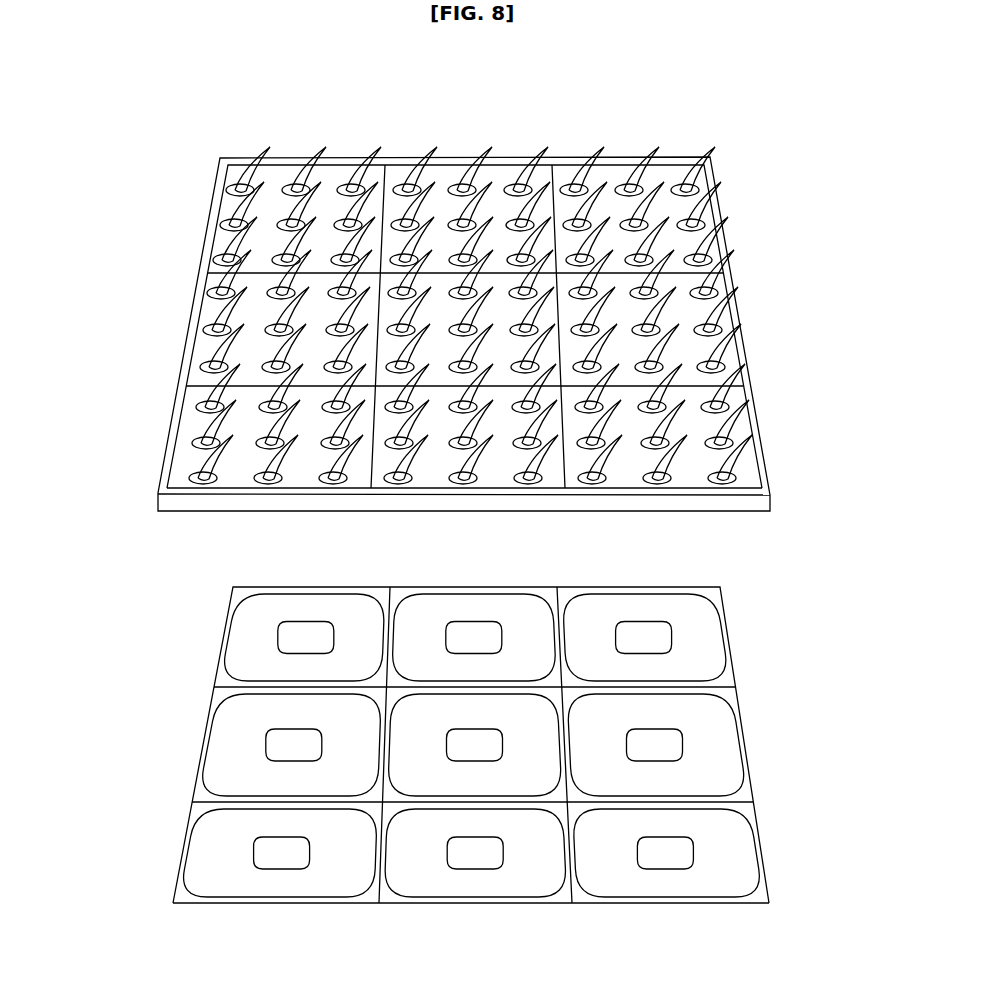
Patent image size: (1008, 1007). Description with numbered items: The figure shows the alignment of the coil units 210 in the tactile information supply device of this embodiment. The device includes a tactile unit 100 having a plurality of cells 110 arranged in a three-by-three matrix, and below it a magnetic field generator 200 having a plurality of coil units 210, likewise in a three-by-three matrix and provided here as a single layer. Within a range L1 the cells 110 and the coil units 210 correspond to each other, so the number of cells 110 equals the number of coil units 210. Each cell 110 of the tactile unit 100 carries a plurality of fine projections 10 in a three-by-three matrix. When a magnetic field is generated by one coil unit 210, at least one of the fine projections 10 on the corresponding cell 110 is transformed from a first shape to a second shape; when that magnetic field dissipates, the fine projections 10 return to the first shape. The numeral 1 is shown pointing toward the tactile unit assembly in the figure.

The microneedle patch assembly 1 is at (788, 110).
The fine projections 10 is at (640, 181).
The tactile unit 100 is at (170, 243).
The cells 110 is at (500, 195).
The magnetic field generator 200 is at (186, 673).
The coil units 210 is at (217, 852).
The range L1 is at (183, 488).